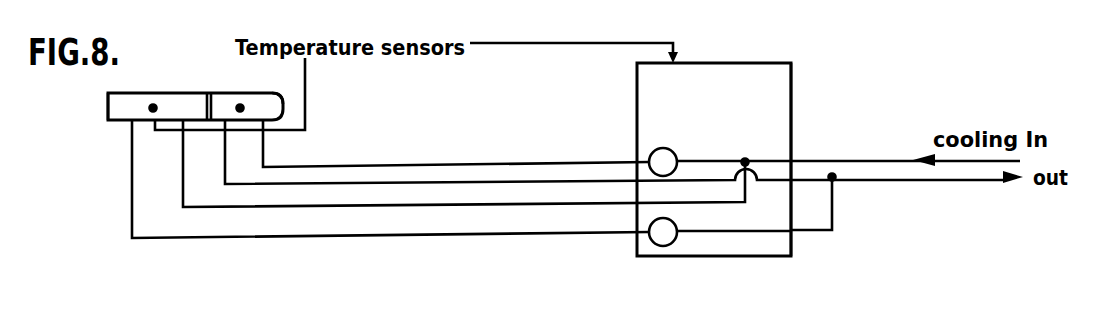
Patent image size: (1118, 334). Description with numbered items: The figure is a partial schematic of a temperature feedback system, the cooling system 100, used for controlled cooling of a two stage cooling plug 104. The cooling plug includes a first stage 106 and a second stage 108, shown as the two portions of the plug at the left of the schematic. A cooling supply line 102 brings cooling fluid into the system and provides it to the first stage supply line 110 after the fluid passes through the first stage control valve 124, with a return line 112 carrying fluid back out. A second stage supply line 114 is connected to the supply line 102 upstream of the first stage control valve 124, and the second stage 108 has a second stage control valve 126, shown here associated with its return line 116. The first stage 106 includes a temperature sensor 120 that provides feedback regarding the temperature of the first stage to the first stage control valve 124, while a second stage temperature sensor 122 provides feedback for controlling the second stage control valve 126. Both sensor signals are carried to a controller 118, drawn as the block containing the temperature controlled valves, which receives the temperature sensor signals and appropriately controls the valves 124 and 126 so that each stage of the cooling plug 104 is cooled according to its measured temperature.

The cooling system 100 is at (818, 70).
The cooling supply line 102 is at (865, 158).
The two stage cooling plug 104 is at (181, 70).
The first stage 106 is at (285, 88).
The second stage 108 is at (110, 104).
The first stage supply line 110 is at (458, 165).
The return line 112 is at (404, 183).
The second stage supply line 114 is at (352, 205).
The return line 116 is at (357, 238).
The controller 118 is at (614, 107).
The temperature sensor 120 is at (240, 108).
The second stage temperature sensor 122 is at (153, 108).
The first stage control valve 124 is at (650, 153).
The second stage control valve 126 is at (652, 245).